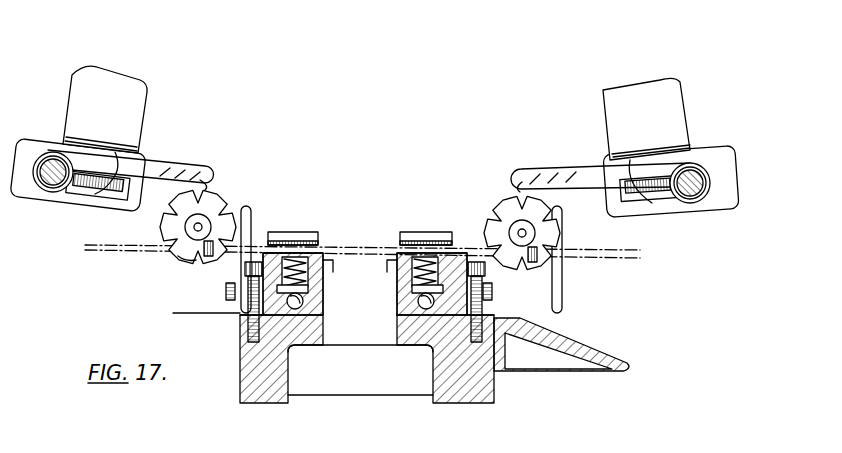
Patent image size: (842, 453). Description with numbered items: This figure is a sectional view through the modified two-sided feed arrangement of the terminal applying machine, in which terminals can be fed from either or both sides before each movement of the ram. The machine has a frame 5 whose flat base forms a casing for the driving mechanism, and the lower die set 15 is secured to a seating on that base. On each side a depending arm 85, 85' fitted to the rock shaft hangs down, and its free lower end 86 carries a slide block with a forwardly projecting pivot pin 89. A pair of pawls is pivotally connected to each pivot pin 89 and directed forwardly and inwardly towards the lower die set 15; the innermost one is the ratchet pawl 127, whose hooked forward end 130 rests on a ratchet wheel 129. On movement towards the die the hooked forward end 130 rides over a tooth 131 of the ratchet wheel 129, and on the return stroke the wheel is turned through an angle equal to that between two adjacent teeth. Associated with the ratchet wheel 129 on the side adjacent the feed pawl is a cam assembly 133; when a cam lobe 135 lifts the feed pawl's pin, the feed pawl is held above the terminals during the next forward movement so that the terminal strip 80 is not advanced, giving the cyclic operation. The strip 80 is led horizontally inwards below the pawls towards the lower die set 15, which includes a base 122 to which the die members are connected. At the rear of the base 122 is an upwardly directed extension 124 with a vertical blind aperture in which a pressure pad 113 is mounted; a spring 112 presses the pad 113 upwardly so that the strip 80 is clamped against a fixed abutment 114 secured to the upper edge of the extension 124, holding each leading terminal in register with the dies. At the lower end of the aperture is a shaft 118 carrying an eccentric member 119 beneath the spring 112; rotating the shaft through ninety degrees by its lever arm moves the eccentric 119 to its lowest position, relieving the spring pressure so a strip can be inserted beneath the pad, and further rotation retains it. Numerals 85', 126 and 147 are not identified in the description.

The frame 5 is at (250, 362).
The lower die set 15 is at (380, 226).
The terminal strip 80 is at (82, 247).
The depending arm 85 is at (87, 109).
The knob 85' is at (663, 119).
The free lower end 86 is at (37, 147).
The pivot pin 89 is at (50, 170).
The spring 112 is at (400, 297).
The pressure pad 113 is at (294, 257).
The abutment 114 is at (276, 232).
The shaft 118 is at (293, 308).
The eccentric member 119 is at (415, 307).
The base 122 is at (398, 340).
The upwardly directed extension 124 is at (397, 271).
The adjusting direction 126 is at (152, 264).
The ratchet pawl 127 is at (153, 168).
The ratchet wheel 129 is at (182, 194).
The hooked forward end 130 is at (206, 184).
The tooth 131 is at (243, 199).
The cam assembly 133 is at (203, 252).
The cam lobe 135 is at (180, 258).
The pin 147 is at (195, 227).